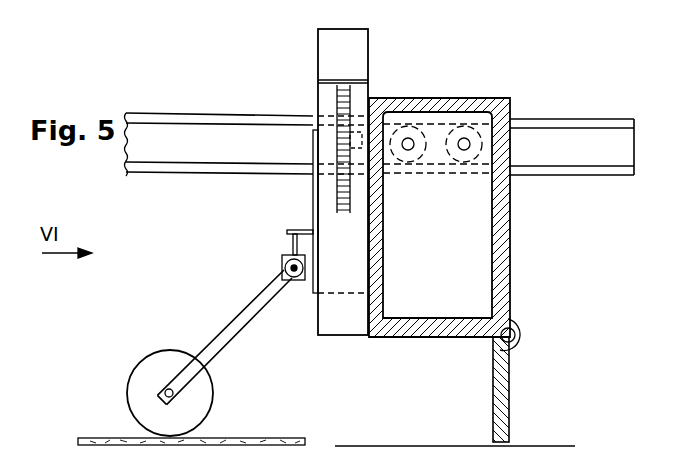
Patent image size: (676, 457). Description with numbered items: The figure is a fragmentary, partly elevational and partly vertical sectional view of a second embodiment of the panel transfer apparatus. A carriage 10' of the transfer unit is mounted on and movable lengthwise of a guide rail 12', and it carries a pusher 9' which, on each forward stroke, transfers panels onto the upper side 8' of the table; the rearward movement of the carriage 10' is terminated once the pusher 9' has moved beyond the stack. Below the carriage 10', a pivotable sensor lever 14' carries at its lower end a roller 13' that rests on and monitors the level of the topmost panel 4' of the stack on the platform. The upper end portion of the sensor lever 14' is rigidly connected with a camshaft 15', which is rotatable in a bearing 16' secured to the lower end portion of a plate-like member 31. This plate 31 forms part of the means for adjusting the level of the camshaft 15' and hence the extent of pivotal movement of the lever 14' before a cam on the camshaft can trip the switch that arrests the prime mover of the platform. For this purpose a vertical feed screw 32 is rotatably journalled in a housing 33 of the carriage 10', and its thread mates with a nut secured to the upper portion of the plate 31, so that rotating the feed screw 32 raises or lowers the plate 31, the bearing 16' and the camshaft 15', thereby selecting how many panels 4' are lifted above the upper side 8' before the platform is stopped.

The topmost panel 4' is at (201, 424).
The upper side of the table 8' is at (455, 434).
The pusher 9' is at (519, 380).
The carriage 10' is at (467, 217).
The guide rail 12' is at (380, 126).
The roller 13' is at (195, 393).
The sensor lever 14' is at (224, 337).
The camshaft 15' is at (263, 260).
The bearing 16' is at (296, 279).
The plate-like member 31 is at (313, 185).
The feed screw 32 is at (313, 112).
The housing 33 is at (355, 333).